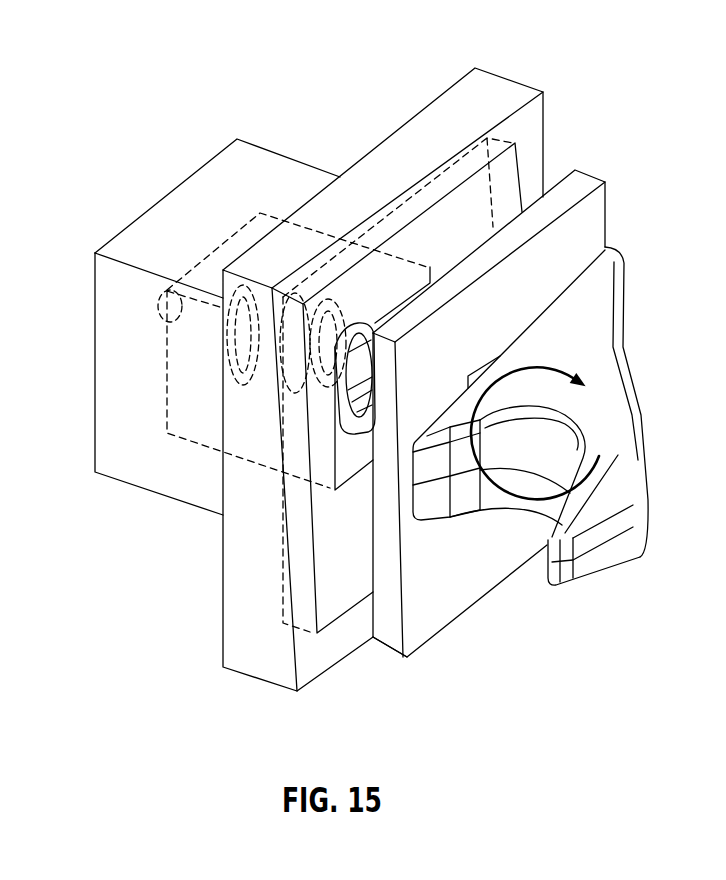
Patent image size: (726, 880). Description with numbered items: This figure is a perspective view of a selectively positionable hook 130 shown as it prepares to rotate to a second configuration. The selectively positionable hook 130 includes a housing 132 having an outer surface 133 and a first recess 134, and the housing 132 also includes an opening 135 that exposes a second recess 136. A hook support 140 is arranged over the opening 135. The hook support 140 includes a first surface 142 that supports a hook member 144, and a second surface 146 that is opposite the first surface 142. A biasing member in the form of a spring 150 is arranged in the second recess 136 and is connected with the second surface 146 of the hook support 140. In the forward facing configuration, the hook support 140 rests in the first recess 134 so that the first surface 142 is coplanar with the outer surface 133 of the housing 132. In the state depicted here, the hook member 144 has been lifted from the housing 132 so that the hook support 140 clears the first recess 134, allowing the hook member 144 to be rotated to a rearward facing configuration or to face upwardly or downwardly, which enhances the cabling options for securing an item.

The selectively positionable hook 130 is at (146, 93).
The housing 132 is at (265, 168).
The outer surface 133 is at (527, 113).
The first recess 134 is at (455, 223).
The opening 135 is at (352, 443).
The second recess 136 is at (183, 397).
The hook support 140 is at (462, 592).
The first surface 142 is at (597, 210).
The hook member 144 is at (608, 510).
The second surface 146 is at (367, 643).
The spring 150 is at (220, 372).